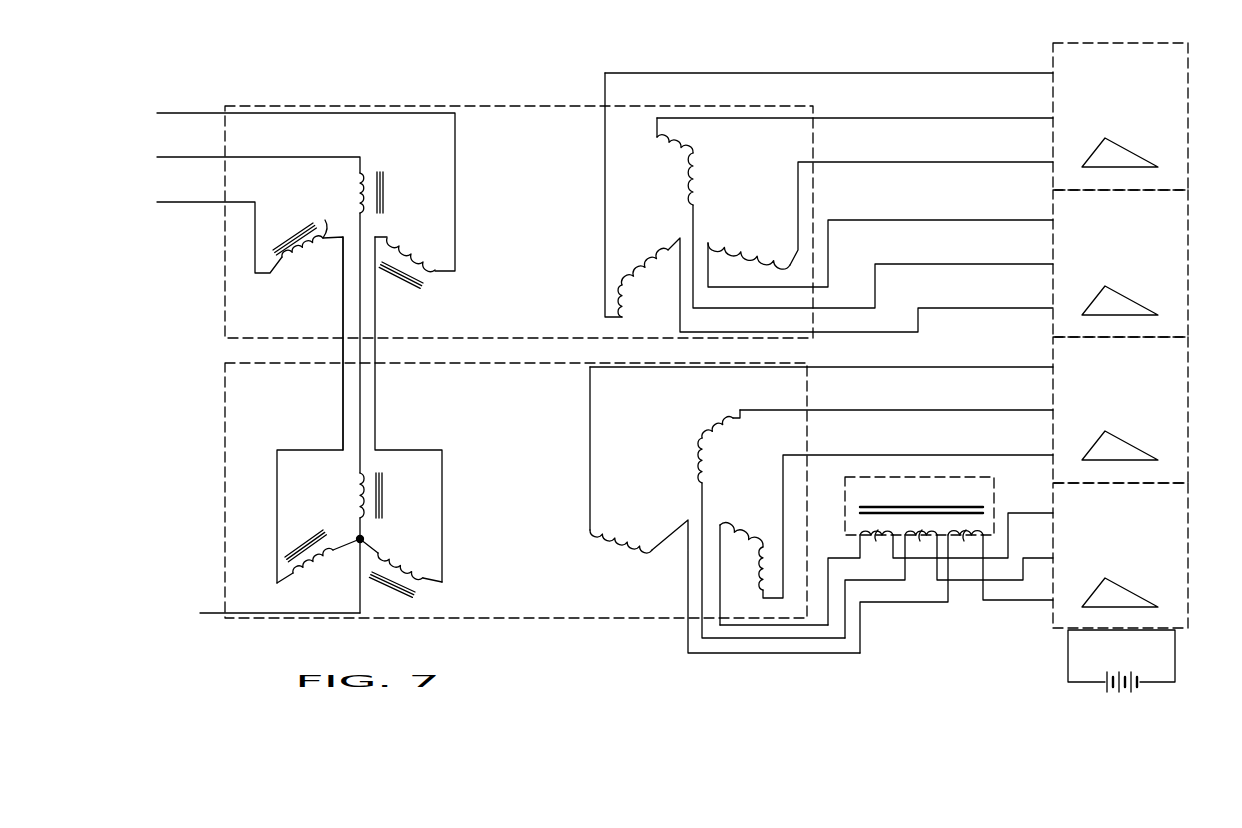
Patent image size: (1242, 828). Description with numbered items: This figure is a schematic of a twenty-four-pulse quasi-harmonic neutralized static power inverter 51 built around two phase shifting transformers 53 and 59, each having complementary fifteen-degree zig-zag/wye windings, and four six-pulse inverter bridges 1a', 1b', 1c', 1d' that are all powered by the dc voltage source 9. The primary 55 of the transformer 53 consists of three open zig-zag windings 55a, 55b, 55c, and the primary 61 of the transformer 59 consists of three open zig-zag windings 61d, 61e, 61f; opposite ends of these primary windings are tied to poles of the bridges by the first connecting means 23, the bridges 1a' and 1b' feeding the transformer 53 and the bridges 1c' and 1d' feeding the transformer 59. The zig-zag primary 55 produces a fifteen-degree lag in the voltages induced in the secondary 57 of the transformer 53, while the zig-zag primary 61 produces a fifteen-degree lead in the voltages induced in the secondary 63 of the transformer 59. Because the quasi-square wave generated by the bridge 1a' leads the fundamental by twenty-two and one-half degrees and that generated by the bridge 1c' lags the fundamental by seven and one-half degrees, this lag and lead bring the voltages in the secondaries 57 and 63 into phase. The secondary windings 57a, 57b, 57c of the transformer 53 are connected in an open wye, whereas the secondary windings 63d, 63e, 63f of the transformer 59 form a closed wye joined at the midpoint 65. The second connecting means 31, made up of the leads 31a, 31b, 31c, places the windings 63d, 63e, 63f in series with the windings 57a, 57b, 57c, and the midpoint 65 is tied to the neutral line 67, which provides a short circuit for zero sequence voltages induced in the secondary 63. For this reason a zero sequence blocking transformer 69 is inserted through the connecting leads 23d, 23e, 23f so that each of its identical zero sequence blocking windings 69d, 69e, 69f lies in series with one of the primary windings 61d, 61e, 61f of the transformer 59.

The inverter 51 is at (545, 54).
The phase shifting transformer 53 is at (471, 105).
The phase shifting transformer 59 is at (538, 619).
The secondary 57 is at (306, 281).
The secondary winding 57a is at (377, 181).
The secondary winding 57b is at (300, 230).
The secondary winding 57c is at (435, 271).
The second connecting means 31 is at (355, 398).
The lead 31a is at (362, 375).
The lead 31b is at (343, 418).
The lead 31c is at (377, 418).
The secondary 63 is at (343, 542).
The secondary winding 63d is at (358, 481).
The secondary winding 63e is at (424, 580).
The secondary winding 63f is at (305, 574).
The midpoint 65 is at (357, 537).
The neutral line 67 is at (275, 613).
The primary 55 is at (806, 202).
The open zig-zag winding 55a is at (700, 156).
The open zig-zag winding 55b is at (745, 248).
The open zig-zag winding 55c is at (665, 278).
The primary 61 is at (799, 510).
The open zig-zag winding 61d is at (690, 458).
The open zig-zag winding 61e is at (740, 522).
The open zig-zag winding 61f is at (660, 552).
The zero sequence blocking transformer 69 is at (949, 533).
The zero sequence blocking winding 69d is at (956, 537).
The zero sequence blocking winding 69e is at (979, 555).
The zero sequence blocking winding 69f is at (1000, 565).
The connecting lead 23d is at (960, 366).
The connecting lead 23e is at (945, 409).
The connecting lead 23f is at (956, 454).
The first connecting means 23 is at (1092, 325).
The six-pulse inverter bridge 1a' is at (1142, 116).
The six-pulse inverter bridge 1b' is at (1142, 263).
The six-pulse inverter bridge 1c' is at (1141, 410).
The six-pulse inverter bridge 1d' is at (1142, 555).
The dc voltage source 9 is at (1140, 686).